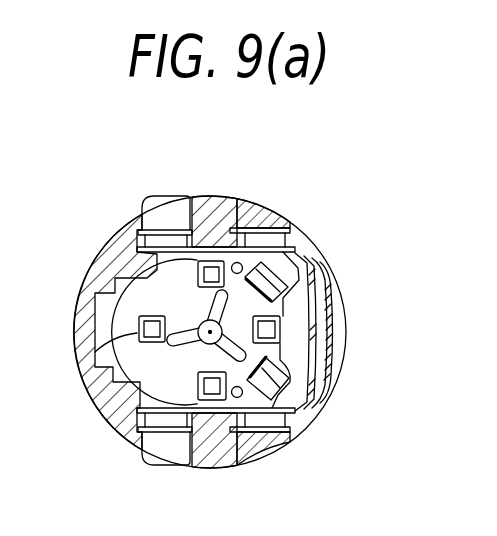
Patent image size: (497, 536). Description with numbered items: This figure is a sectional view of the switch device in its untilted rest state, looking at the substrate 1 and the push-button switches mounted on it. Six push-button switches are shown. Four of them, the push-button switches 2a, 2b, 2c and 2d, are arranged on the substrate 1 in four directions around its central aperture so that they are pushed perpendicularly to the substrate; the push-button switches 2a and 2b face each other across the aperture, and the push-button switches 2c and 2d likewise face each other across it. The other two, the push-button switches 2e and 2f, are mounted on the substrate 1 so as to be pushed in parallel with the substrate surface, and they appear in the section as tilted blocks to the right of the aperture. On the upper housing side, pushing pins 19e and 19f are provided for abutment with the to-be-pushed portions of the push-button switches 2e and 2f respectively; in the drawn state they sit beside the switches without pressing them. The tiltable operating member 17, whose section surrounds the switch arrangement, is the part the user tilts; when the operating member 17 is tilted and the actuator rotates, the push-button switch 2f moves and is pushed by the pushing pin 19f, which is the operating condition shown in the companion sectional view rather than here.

The substrate 1 is at (170, 368).
The push-button switch 2a is at (210, 268).
The push-button switch 2b is at (141, 337).
The push-button switch 2c is at (214, 395).
The push-button switch 2d is at (287, 308).
The push-button switch 2e is at (290, 415).
The push-button switch 2f is at (292, 267).
The operating member 17 is at (338, 353).
The pushing pin 19e is at (240, 398).
The pushing pin 19f is at (238, 262).